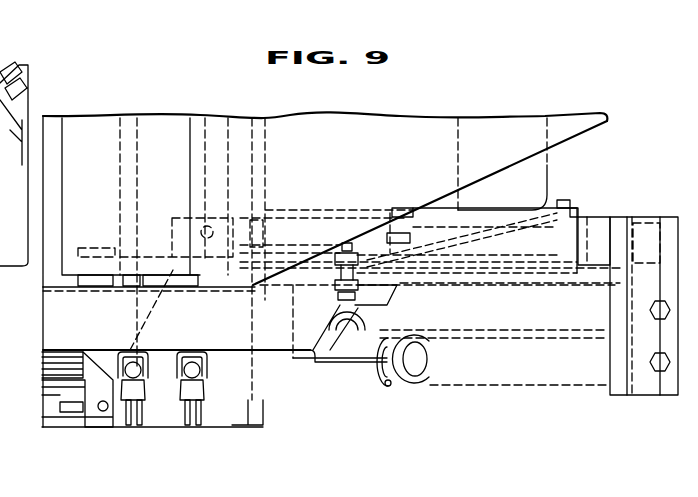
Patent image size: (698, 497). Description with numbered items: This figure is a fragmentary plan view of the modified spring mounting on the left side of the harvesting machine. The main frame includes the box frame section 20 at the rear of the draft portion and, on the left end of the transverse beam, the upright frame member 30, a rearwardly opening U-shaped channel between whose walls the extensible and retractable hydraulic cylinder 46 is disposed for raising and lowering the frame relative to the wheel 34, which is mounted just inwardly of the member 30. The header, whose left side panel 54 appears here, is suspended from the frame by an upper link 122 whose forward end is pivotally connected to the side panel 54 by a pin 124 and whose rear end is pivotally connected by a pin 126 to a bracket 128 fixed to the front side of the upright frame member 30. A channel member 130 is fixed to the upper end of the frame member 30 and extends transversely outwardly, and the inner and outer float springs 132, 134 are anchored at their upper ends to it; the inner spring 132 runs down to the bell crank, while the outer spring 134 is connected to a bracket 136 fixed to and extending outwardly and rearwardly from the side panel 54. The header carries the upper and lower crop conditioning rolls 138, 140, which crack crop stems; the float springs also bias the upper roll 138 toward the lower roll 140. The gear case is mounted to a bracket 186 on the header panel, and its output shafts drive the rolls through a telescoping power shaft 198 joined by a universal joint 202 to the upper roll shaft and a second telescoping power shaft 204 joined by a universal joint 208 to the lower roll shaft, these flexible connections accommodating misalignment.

The box frame section 20 is at (240, 410).
The upright frame member 30 is at (600, 222).
The wheel 34 is at (548, 174).
The hydraulic cylinder 46 is at (518, 272).
The left side panel 54 is at (45, 320).
The upper link 122 is at (496, 236).
The pin 124 is at (345, 243).
The pin 126 is at (567, 198).
The bracket 128 is at (583, 216).
The channel member 130 is at (638, 387).
The inner float spring 132 is at (347, 330).
The outer float spring 134 is at (417, 382).
The bracket 136 is at (358, 362).
The upper crop conditioning roll 138 is at (108, 113).
The lower crop conditioning roll 140 is at (200, 126).
The bracket 186 is at (91, 365).
The telescoping power shaft 198 is at (150, 420).
The universal joint 202 is at (143, 386).
The second telescoping power shaft 204 is at (197, 415).
The universal joint 208 is at (203, 389).